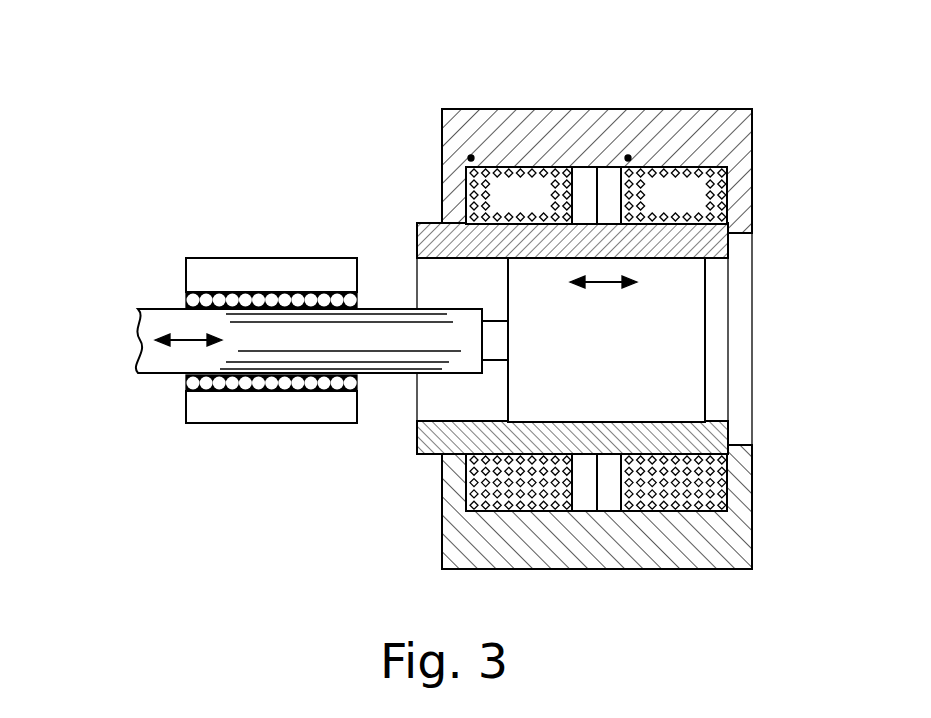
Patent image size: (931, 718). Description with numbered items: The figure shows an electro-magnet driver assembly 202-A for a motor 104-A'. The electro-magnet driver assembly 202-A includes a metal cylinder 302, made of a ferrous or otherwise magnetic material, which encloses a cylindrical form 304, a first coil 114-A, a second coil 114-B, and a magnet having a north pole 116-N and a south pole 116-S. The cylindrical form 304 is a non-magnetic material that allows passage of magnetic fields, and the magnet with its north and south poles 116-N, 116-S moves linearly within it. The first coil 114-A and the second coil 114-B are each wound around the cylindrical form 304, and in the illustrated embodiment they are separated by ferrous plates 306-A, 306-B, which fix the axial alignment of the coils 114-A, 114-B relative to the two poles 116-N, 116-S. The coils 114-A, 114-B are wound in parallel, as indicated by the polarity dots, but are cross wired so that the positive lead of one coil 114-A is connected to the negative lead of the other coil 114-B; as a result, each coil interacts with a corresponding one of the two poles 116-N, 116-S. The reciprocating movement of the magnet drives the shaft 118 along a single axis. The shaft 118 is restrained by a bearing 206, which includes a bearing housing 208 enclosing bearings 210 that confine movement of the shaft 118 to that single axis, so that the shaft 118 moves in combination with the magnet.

The motor 104-A' is at (390, 326).
The electro-magnet driver assembly 202-A is at (582, 80).
The shaft 118 is at (155, 306).
The bearing 206 is at (263, 258).
The bearing housing 208 is at (255, 423).
The bearings 210 is at (185, 380).
The metal cylinder 302 is at (442, 175).
The cylindrical form 304 is at (417, 448).
The first coil 114-A is at (707, 208).
The second coil 114-B is at (547, 208).
The south pole 116-S is at (583, 354).
The north pole 116-N is at (697, 354).
The ferrous plate 306-A is at (608, 512).
The ferrous plate 306-B is at (588, 512).